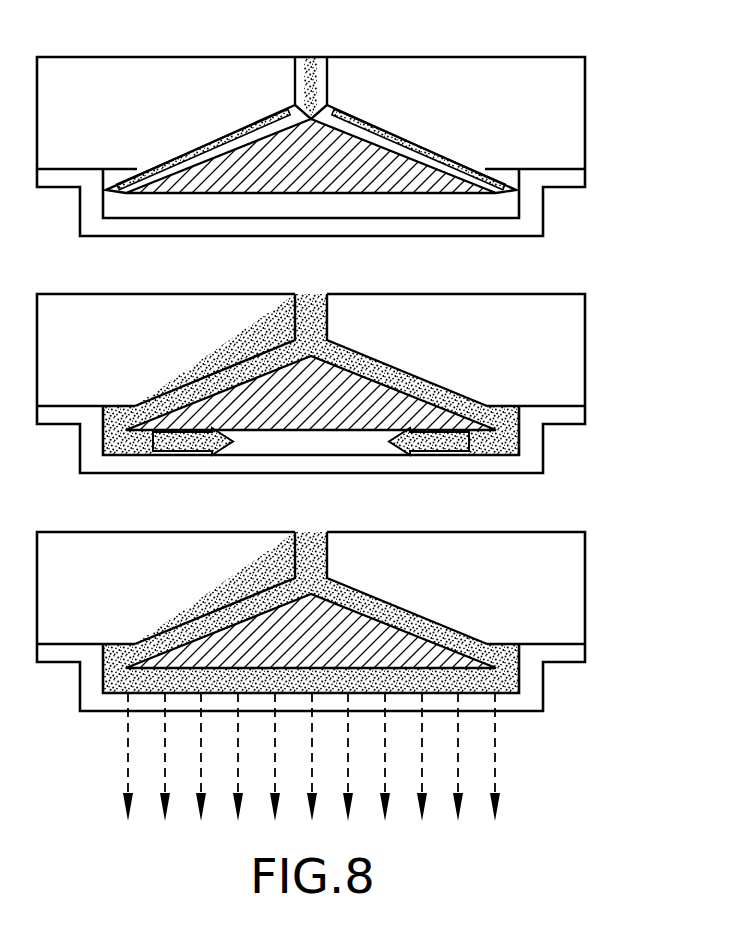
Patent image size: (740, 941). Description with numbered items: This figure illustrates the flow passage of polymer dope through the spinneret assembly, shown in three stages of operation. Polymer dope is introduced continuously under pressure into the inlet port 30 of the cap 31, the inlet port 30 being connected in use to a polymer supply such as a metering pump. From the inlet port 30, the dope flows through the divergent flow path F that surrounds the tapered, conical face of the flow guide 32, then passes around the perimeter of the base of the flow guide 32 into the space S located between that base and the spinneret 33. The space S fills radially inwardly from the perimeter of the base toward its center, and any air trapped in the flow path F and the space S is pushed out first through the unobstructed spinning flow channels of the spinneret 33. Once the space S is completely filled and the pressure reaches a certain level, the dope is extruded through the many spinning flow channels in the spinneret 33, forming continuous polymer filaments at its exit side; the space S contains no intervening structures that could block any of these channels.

The inlet port 30 is at (327, 73).
The cap 31 is at (585, 108).
The flow guide 32 is at (218, 177).
The spinneret 33 is at (542, 212).
The divergent flow path F is at (417, 145).
The space S is at (423, 209).